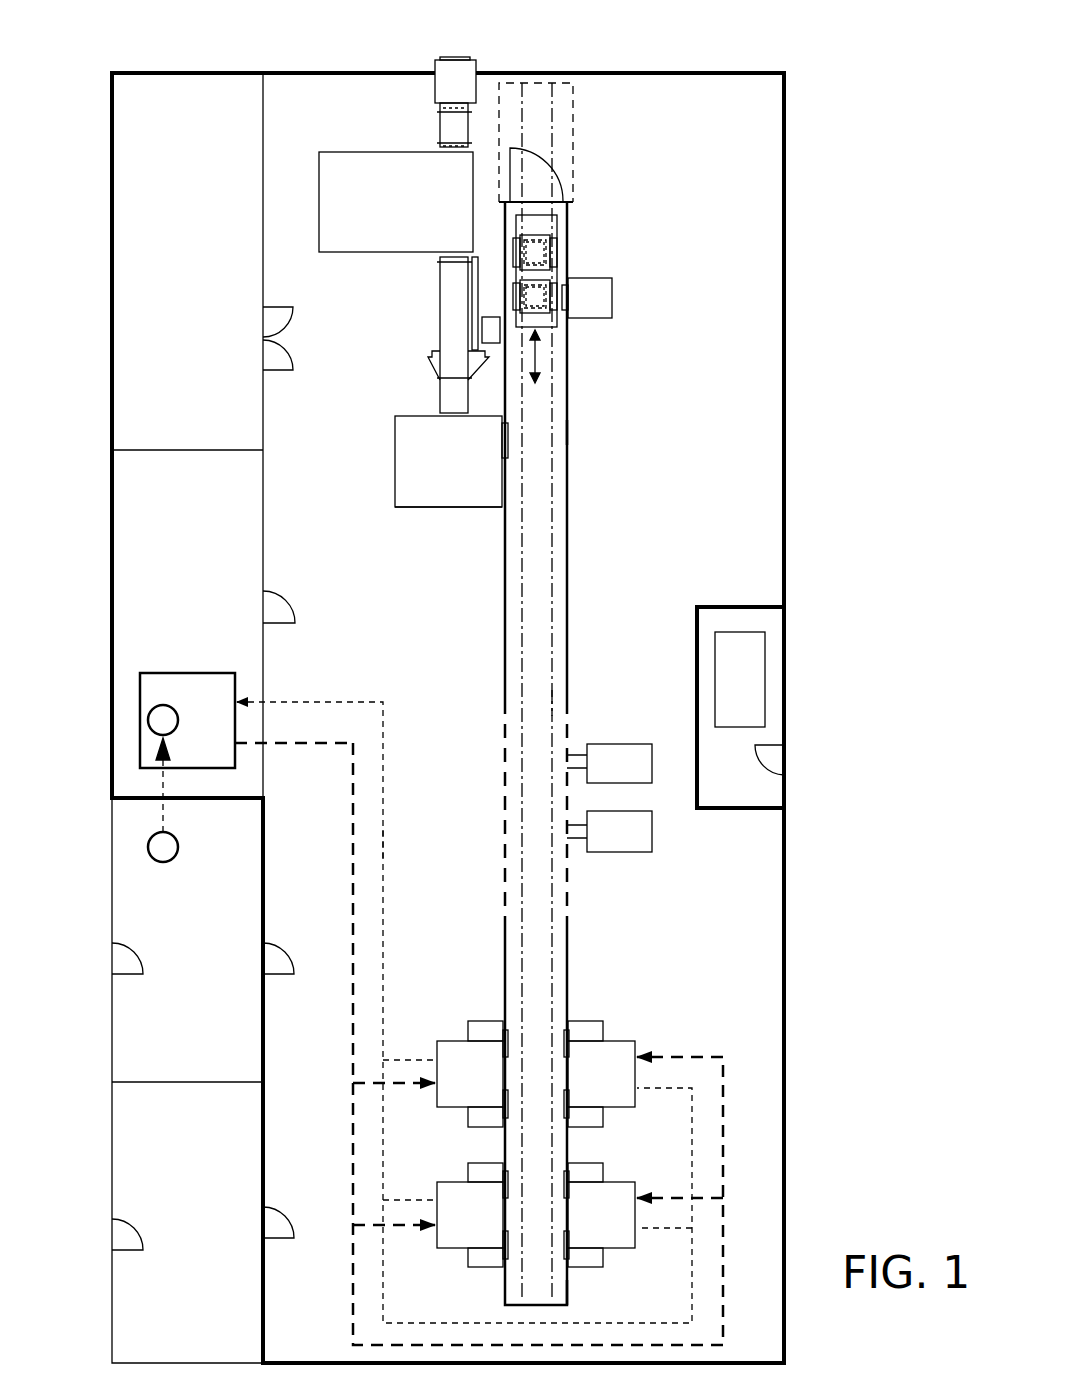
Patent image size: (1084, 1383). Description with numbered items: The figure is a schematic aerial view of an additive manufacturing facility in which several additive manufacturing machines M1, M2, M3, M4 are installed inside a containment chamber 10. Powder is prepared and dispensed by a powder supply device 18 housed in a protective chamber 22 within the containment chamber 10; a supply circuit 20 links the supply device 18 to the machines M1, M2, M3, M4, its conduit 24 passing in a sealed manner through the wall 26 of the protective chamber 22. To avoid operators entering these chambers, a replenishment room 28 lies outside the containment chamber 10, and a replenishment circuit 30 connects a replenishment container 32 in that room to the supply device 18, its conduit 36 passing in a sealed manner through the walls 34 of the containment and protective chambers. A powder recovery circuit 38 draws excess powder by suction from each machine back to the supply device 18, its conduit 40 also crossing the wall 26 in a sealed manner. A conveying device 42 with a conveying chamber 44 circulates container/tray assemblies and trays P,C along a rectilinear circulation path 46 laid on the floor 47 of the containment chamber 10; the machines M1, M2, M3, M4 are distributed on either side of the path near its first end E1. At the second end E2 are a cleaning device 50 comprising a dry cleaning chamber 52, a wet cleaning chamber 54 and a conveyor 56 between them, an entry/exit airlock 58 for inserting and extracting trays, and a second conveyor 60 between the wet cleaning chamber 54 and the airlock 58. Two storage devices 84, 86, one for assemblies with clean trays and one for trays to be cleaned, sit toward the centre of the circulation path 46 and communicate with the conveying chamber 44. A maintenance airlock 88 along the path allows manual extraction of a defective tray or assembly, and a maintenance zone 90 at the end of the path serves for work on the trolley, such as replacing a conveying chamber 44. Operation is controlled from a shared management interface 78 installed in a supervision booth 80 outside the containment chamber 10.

The containment chamber 10 is at (788, 300).
The powder supply device 18 is at (160, 672).
The supply circuit 20 is at (350, 828).
The protective chamber 22 is at (266, 483).
The conduit of the supply circuit 24 is at (352, 900).
The wall of the protective chamber 26 is at (265, 533).
The replenishment room 28 is at (203, 1016).
The replenishment circuit 30 is at (170, 816).
The replenishment container 32 is at (157, 850).
The walls of the containment chamber and protective chamber 34 is at (246, 797).
The conduit of the replenishment circuit 36 is at (162, 812).
The powder recovery circuit 38 is at (386, 746).
The conduit of the recovery circuit 40 is at (386, 842).
The conveying device 42 is at (570, 552).
The conveying chamber 44 is at (545, 235).
The circulation path 46 is at (553, 703).
The floor 47 is at (695, 914).
The cleaning device 50 is at (424, 512).
The dry cleaning chamber 52 is at (462, 496).
The wet cleaning chamber 54 is at (380, 228).
The conveyor 56 is at (450, 332).
The entry/exit airlock 58 is at (456, 78).
The second conveyor 60 is at (448, 130).
The management interface 78 is at (740, 679).
The supervision booth 80 is at (750, 788).
The storage device for clean trays 84 is at (609, 831).
The storage device for trays to be cleaned 86 is at (609, 763).
The maintenance airlock 88 is at (613, 298).
The maintenance zone 90 is at (574, 117).
The additive manufacturing machine M1 is at (452, 1060).
The additive manufacturing machine M2 is at (452, 1200).
The additive manufacturing machine M3 is at (620, 1200).
The additive manufacturing machine M4 is at (620, 1060).
The first end of the circulation path E1 is at (570, 1293).
The second end of the circulation path E2 is at (570, 432).
The trays and container/tray assemblies P,C is at (548, 289).